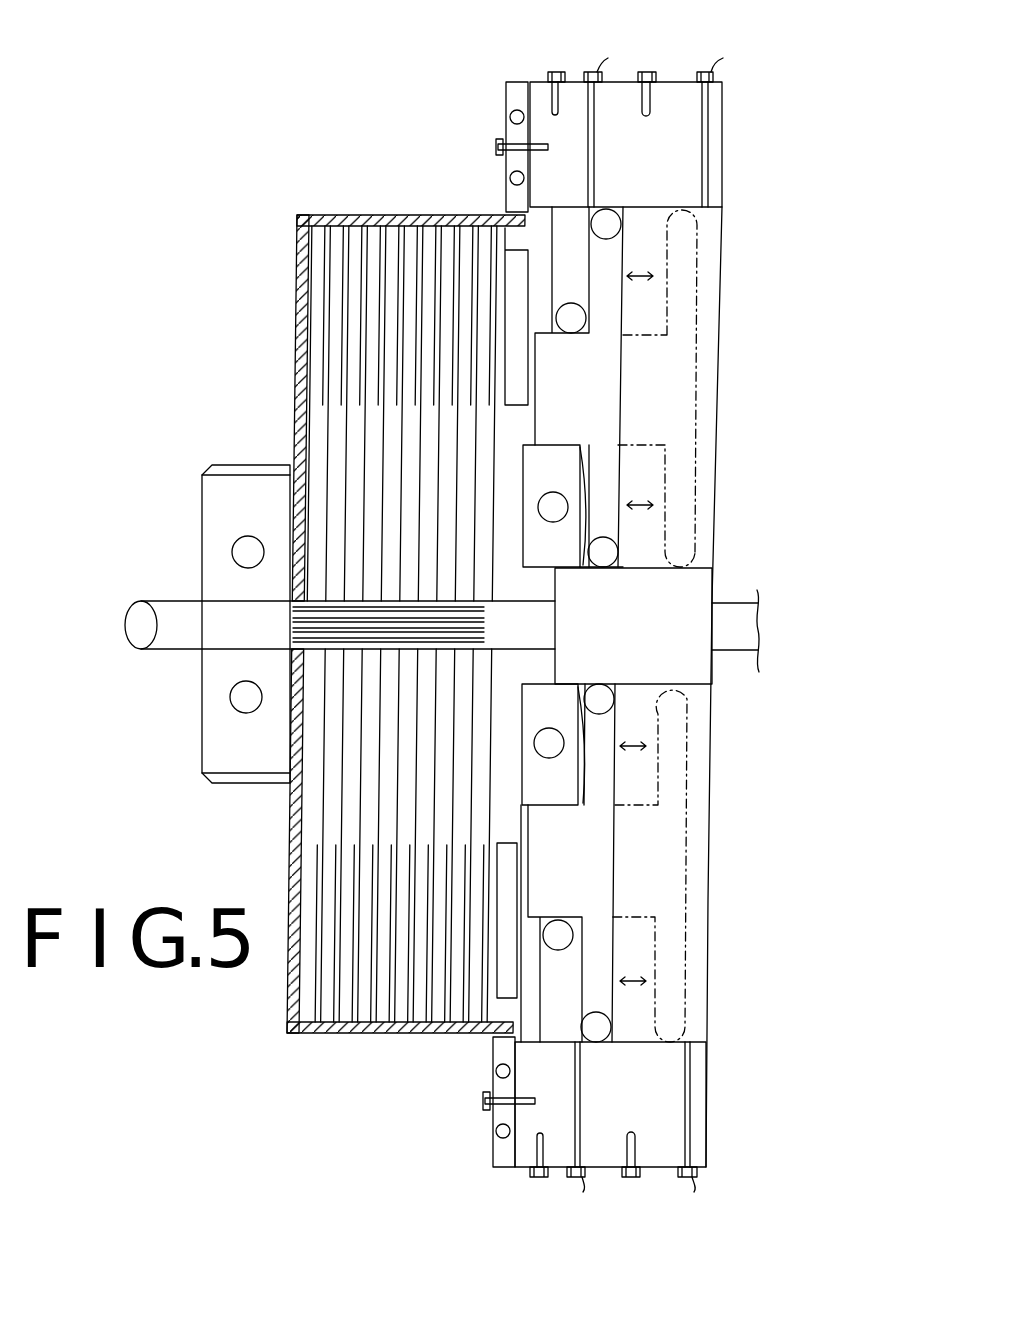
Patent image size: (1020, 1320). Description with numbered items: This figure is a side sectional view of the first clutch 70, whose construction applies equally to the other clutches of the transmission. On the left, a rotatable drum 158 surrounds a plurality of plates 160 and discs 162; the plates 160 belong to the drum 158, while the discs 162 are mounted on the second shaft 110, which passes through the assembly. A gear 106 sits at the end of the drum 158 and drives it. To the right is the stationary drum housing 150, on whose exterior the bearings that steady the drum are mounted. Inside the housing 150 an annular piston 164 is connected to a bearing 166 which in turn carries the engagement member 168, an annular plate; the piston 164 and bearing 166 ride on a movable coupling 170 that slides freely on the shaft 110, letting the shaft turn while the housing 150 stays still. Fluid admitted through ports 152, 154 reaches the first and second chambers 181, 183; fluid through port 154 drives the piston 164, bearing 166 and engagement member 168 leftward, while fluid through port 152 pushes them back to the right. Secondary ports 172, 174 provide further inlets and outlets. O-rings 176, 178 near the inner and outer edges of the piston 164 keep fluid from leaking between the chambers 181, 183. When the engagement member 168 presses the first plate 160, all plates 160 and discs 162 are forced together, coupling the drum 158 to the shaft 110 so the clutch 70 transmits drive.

The first clutch 70 is at (262, 283).
The gear 106 is at (228, 504).
The second shaft 110 is at (200, 632).
The drum housing 150 is at (729, 207).
The port 152 is at (598, 62).
The port 154 is at (704, 72).
The rotatable drum 158 is at (395, 200).
The plates 160 is at (486, 1002).
The discs 162 is at (324, 826).
The piston 164 is at (598, 395).
The bearing 166 is at (580, 450).
The engagement member 168 is at (521, 277).
The movable coupling 170 is at (673, 600).
The secondary port 172 is at (573, 1110).
The secondary port 174 is at (697, 1118).
The O-ring 176 is at (618, 214).
The O-ring 178 is at (605, 690).
The first chamber 181 is at (580, 965).
The second chamber 183 is at (703, 305).